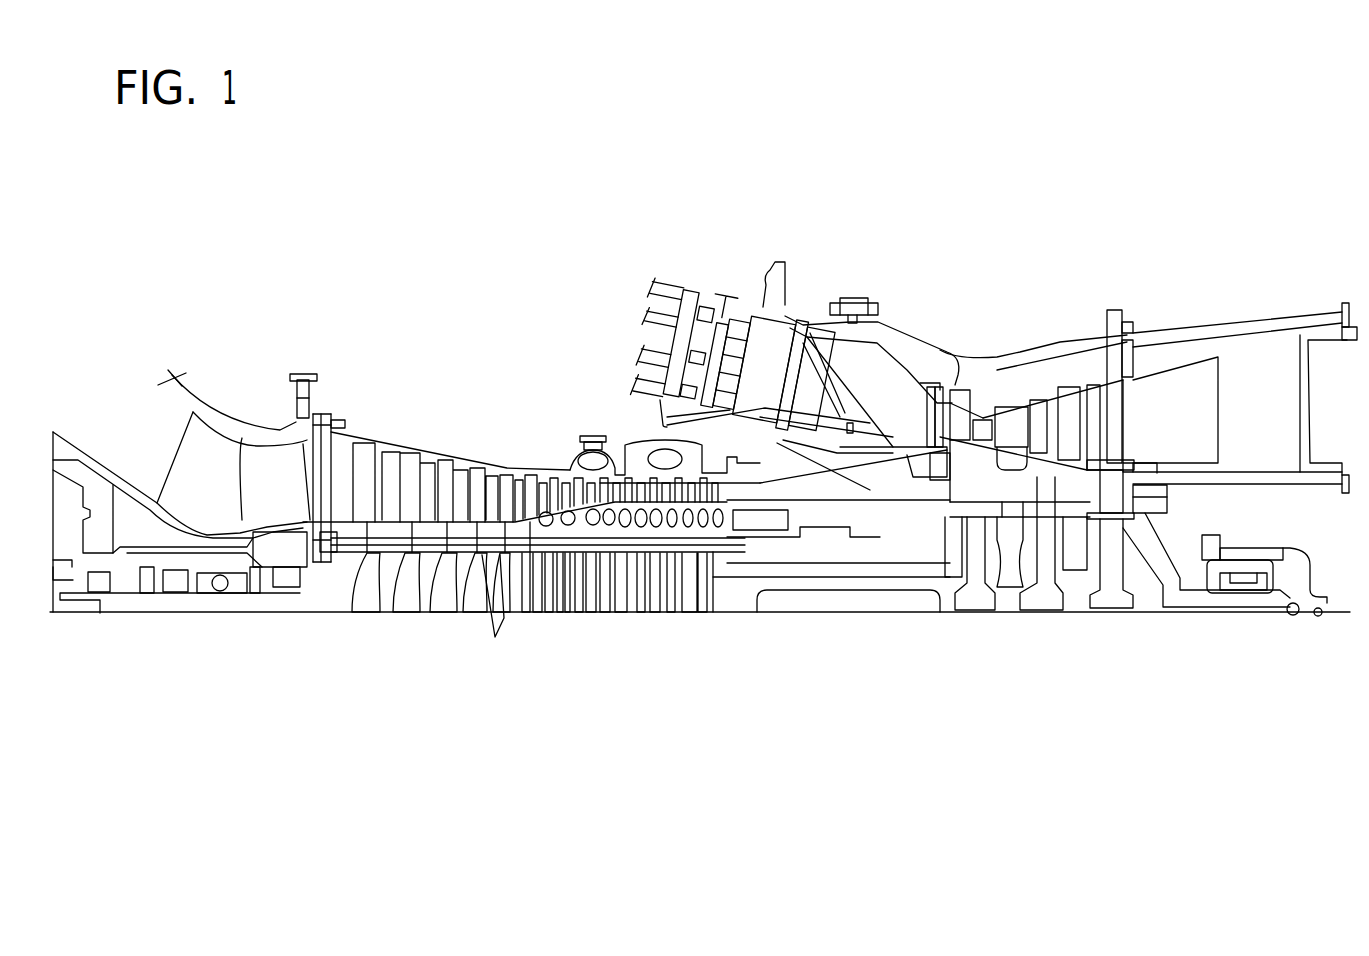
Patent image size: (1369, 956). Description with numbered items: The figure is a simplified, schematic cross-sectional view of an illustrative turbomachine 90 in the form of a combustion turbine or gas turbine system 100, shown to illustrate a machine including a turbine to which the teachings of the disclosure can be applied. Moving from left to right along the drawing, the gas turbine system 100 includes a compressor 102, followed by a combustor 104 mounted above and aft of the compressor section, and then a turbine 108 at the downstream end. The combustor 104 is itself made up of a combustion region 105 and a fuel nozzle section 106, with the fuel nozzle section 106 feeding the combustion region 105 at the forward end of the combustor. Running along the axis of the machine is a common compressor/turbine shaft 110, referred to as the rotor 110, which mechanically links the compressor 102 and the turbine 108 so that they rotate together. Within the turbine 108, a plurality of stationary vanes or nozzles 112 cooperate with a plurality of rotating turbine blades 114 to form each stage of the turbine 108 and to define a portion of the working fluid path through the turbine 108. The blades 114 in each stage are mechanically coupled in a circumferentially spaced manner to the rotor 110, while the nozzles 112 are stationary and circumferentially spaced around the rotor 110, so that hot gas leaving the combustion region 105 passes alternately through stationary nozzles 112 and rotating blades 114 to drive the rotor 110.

The turbomachine 90 is at (1033, 224).
The gas turbine system 100 is at (228, 252).
The compressor 102 is at (437, 460).
The combustor 104 is at (822, 234).
The combustion region 105 is at (765, 350).
The fuel nozzle section 106 is at (698, 298).
The turbine 108 is at (1092, 370).
The common compressor/turbine shaft 110 is at (347, 560).
The stationary vanes or nozzles 112 is at (1097, 503).
The rotating turbine blades 114 is at (1032, 412).